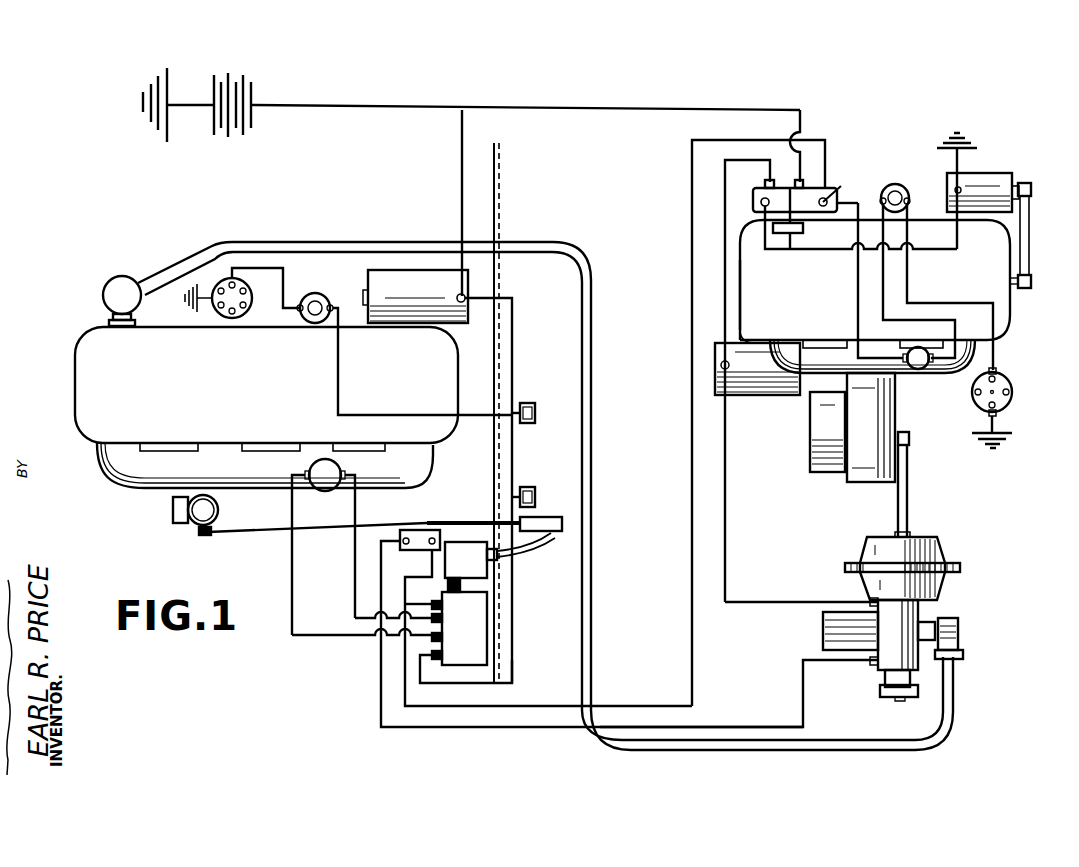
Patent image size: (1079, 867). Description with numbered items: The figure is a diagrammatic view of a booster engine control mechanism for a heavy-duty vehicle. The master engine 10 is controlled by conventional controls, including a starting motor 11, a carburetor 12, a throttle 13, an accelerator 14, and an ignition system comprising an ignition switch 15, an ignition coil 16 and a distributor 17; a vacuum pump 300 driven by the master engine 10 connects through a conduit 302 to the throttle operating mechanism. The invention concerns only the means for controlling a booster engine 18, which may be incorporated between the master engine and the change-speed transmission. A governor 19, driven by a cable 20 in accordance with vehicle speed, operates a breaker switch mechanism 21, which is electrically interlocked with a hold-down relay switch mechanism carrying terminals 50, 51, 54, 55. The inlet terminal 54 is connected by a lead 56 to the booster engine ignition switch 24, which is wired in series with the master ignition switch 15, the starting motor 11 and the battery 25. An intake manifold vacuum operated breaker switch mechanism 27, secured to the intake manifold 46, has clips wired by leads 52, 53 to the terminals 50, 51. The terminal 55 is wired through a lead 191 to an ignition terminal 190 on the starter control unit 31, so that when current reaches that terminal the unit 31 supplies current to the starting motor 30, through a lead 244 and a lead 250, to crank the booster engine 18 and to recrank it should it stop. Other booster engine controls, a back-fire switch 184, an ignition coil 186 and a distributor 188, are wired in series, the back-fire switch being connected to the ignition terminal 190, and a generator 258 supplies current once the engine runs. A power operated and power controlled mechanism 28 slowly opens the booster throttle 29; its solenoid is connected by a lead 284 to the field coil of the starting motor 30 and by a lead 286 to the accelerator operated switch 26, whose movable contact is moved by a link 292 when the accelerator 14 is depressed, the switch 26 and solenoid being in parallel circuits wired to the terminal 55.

The master engine 10 is at (88, 376).
The starting motor 11 is at (423, 308).
The carburetor 12 is at (175, 520).
The throttle 13 is at (204, 536).
The accelerator 14 is at (562, 524).
The ignition switch 15 is at (531, 402).
The ignition coil 16 is at (311, 322).
The distributor 17 is at (227, 318).
The booster engine 18 is at (1003, 300).
The governor 19 is at (473, 567).
The cable 20 is at (529, 549).
The breaker switch mechanism 21 is at (483, 623).
The booster engine ignition switch 24 is at (531, 487).
The battery 25 is at (237, 138).
The accelerator operated switch 26 is at (422, 530).
The intake manifold vacuum operated breaker switch mechanism 27 is at (327, 483).
The power operated and power controlled mechanism 28 is at (935, 611).
The throttle 29 is at (911, 440).
The starting motor 30 is at (763, 396).
The starter control unit 31 is at (838, 189).
The intake manifold 46 is at (117, 486).
The terminal 50 is at (450, 640).
The terminal 51 is at (450, 621).
The lead 52 is at (312, 639).
The lead 53 is at (355, 562).
The inlet terminal 54 is at (450, 658).
The terminal 55 is at (437, 606).
The lead 56 is at (507, 672).
The back-fire switch 184 is at (918, 370).
The ignition coil 186 is at (897, 184).
The distributor 188 is at (1013, 402).
The ignition terminal 190 is at (828, 198).
The lead 191 is at (689, 626).
The lead 244 is at (327, 106).
The lead 250 is at (733, 300).
The generator 258 is at (979, 187).
The lead 284 is at (725, 513).
The lead 286 is at (735, 724).
The link 292 is at (462, 516).
The vacuum pump 300 is at (116, 288).
The conduit 302 is at (378, 242).